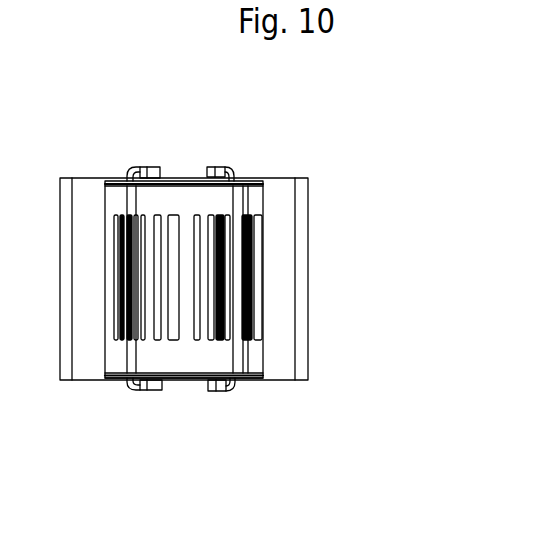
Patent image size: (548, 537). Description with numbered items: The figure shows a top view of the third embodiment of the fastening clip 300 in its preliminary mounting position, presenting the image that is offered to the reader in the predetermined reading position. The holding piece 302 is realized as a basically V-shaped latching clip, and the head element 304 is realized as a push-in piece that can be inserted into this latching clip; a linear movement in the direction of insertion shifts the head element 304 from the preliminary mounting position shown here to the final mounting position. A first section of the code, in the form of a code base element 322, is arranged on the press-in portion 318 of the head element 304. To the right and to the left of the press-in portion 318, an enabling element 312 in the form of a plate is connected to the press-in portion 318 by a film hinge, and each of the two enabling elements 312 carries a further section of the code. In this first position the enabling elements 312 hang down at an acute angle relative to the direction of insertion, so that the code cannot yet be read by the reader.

The fastening clip 300 is at (290, 431).
The holding piece 302 is at (85, 360).
The head element 304 is at (192, 388).
The enabling element 312 is at (120, 188).
The press-in portion 318 is at (152, 363).
The code base element 322 is at (178, 228).